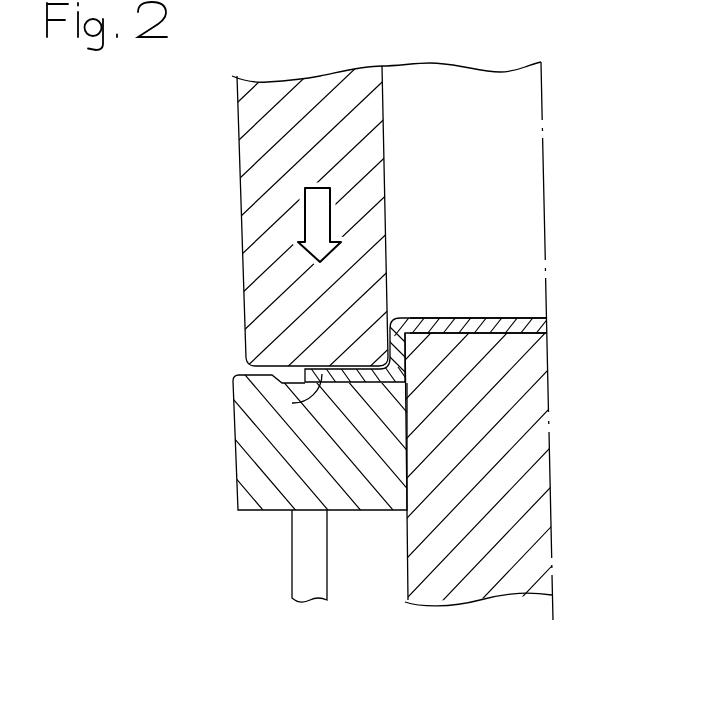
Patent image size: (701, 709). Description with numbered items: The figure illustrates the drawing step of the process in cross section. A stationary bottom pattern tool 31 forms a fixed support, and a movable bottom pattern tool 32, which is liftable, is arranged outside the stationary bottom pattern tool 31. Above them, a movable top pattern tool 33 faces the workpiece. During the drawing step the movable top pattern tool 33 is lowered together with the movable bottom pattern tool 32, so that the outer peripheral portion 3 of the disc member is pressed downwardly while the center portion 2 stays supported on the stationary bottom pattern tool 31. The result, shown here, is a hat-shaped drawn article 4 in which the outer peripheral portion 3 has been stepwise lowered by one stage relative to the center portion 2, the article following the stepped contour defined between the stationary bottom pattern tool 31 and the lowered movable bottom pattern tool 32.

The center portion 2 is at (508, 315).
The outer peripheral portion 3 is at (292, 403).
The hat-shaped drawn article 4 is at (438, 317).
The stationary bottom pattern tool 31 is at (457, 603).
The movable bottom pattern tool 32 is at (236, 466).
The movable top pattern tool 33 is at (244, 234).